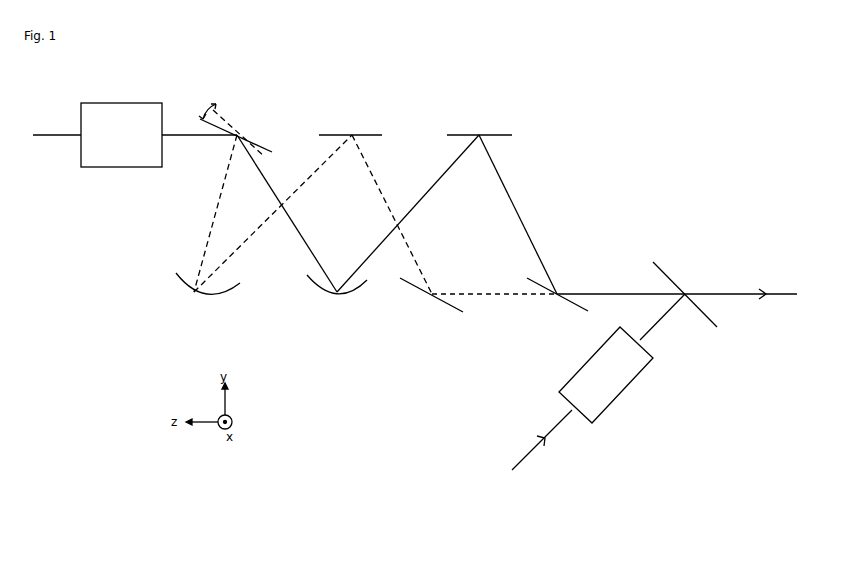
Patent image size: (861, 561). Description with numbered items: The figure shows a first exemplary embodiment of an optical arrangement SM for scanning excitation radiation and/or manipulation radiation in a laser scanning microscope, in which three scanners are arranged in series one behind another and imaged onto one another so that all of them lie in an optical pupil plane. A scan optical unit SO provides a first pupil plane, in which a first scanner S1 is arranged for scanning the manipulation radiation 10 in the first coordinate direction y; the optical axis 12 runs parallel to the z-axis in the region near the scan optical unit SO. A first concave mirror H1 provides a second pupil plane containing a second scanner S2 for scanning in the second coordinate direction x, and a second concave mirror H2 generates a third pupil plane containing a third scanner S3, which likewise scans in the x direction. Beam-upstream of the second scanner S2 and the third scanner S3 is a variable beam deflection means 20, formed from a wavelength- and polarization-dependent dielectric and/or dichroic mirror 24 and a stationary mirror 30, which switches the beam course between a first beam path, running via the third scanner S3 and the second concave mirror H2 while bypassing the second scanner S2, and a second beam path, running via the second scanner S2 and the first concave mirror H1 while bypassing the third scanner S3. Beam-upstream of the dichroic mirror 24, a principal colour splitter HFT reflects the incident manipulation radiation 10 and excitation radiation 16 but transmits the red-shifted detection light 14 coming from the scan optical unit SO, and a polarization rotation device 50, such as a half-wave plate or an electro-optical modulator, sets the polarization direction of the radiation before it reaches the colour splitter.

The optical axis 12 is at (43, 138).
The scan optical unit SO is at (102, 142).
The first scanner S1 is at (232, 128).
The second scanner S2 is at (362, 133).
The third scanner S3 is at (498, 132).
The optical arrangement SM is at (423, 76).
The excitation radiation 16 is at (218, 212).
The manipulation radiation 10 is at (308, 242).
The first concave mirror H1 is at (177, 288).
The second concave mirror H2 is at (312, 291).
The stationary mirror 30 is at (452, 308).
The dielectric and/or dichroic mirror 24 is at (583, 310).
The variable beam deflection means 20 is at (525, 328).
The detection light 14 is at (727, 292).
The principal colour splitter HFT is at (708, 321).
The polarization rotation device 50 is at (595, 382).